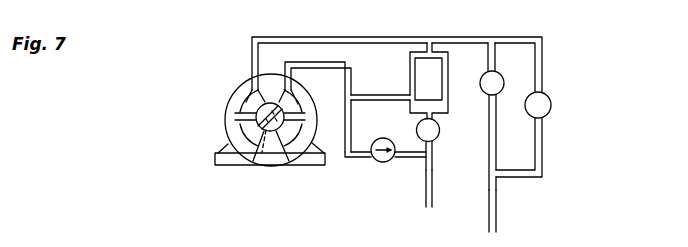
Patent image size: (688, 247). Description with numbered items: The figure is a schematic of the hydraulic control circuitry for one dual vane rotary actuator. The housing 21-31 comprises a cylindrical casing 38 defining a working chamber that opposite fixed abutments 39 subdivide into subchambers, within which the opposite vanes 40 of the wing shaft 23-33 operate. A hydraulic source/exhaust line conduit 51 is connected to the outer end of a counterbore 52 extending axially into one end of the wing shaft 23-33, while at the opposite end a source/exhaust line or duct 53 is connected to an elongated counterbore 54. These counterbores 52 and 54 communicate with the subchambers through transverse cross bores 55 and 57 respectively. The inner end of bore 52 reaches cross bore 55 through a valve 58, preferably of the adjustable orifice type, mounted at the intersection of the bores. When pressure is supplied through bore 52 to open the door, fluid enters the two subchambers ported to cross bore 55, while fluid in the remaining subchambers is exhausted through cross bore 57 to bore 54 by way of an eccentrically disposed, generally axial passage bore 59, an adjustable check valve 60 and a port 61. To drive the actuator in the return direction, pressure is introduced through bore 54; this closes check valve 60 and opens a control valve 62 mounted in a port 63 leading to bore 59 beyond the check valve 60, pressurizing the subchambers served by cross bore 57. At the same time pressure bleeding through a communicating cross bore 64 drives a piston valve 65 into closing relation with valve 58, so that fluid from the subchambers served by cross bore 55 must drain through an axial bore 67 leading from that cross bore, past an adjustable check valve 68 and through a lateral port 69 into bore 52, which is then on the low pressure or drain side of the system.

The cylindrical casing 38 is at (243, 83).
The fixed abutments 39 is at (270, 91).
The vanes 40 is at (235, 115).
The housing 21-31 is at (262, 118).
The wing shaft 23-33 is at (268, 128).
The cross bore 55 is at (228, 143).
The cross bore 57 is at (272, 130).
The axial bore 67 is at (341, 110).
The adjustable check valve 68 is at (382, 163).
The lateral port 69 is at (412, 158).
The hydraulic source/exhaust line conduit 51 is at (425, 202).
The counterbore 52 is at (433, 173).
The hydraulic source/exhaust fluid communication line 53 is at (497, 205).
The counterbore 54 is at (490, 183).
The valve 58 is at (438, 123).
The passage bore 59 is at (483, 37).
The adjustable check valve 60 is at (552, 101).
The port 61 is at (520, 177).
The control valve 62 is at (503, 80).
The port 63 is at (498, 53).
The cross bore 64 is at (428, 46).
The piston valve 65 is at (427, 71).